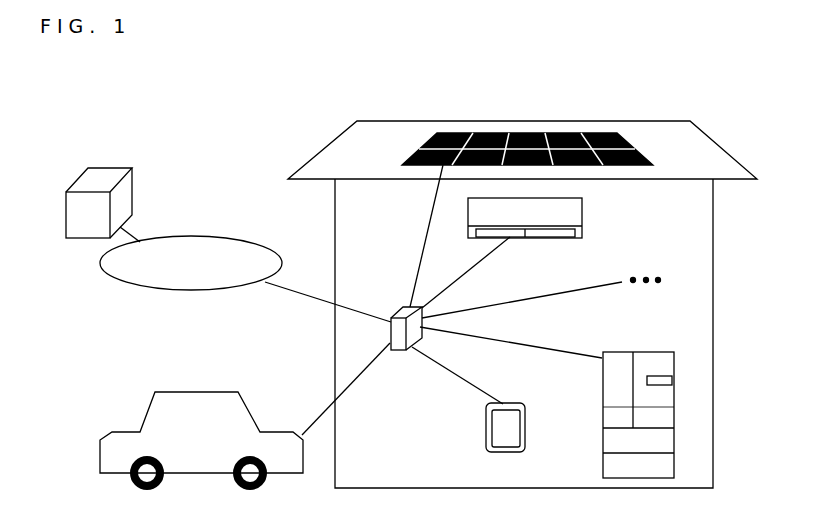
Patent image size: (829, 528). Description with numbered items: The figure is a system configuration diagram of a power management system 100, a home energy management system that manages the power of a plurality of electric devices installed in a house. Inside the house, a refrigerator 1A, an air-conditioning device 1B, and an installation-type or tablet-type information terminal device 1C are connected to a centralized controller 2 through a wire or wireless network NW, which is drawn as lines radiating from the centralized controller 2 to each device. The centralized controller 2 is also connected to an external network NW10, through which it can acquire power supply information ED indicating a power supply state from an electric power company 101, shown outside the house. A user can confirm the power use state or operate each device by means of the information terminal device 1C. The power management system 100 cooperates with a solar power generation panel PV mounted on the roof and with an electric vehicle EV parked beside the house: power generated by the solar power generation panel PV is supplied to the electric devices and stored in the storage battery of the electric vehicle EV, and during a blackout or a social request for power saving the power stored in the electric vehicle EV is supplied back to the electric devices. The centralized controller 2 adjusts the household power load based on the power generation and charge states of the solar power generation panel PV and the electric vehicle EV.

The power management system 100 is at (393, 238).
The solar power generation panel PV is at (533, 133).
The air-conditioning device 1B is at (582, 215).
The centralized controller 2 is at (403, 306).
The network NW is at (480, 332).
The power supply information ED is at (328, 296).
The refrigerator 1A is at (603, 388).
The information terminal device 1C is at (485, 425).
The electric power company 101 is at (90, 233).
The external network NW10 is at (195, 236).
The electric vehicle EV is at (200, 392).